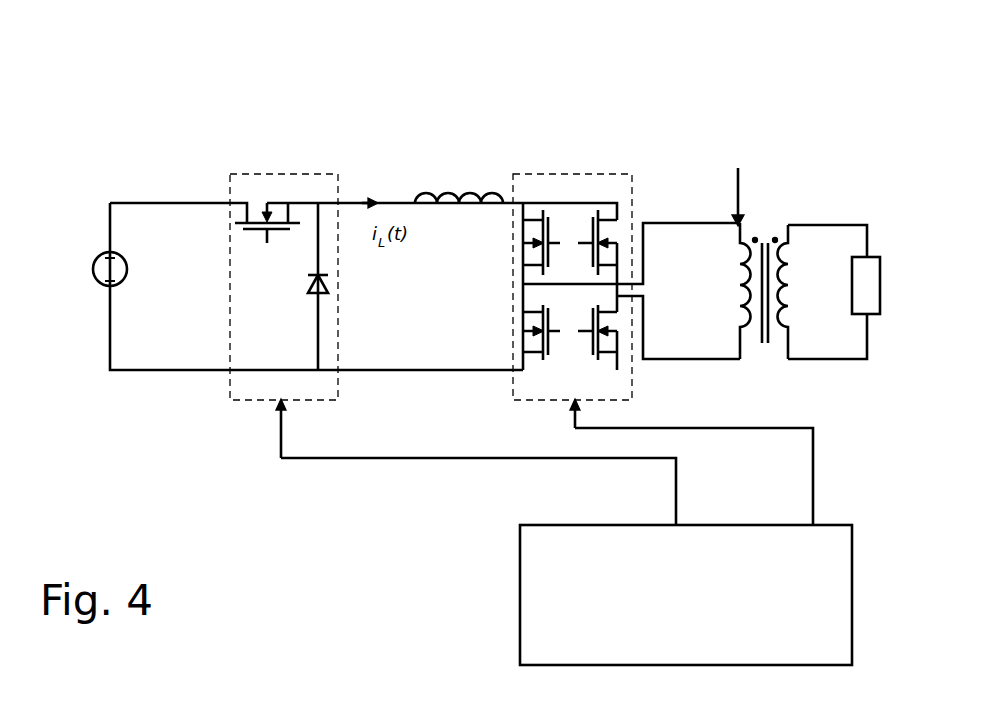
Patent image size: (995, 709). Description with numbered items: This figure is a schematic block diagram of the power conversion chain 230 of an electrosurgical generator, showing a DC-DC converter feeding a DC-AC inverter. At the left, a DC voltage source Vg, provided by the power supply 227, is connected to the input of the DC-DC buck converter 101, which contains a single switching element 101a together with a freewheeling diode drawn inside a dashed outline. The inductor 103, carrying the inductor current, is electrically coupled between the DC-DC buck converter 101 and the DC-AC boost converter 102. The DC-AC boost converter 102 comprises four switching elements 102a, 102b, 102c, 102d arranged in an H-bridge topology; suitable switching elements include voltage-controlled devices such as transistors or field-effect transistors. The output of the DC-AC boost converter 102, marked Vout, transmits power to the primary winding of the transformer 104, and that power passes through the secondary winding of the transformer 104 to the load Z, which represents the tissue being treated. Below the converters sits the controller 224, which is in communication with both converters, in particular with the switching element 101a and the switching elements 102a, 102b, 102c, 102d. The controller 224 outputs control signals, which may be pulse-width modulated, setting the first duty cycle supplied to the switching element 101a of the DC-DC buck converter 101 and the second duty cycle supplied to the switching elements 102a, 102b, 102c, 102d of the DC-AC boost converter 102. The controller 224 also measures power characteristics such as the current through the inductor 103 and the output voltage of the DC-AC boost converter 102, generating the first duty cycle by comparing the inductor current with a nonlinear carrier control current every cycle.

The power conversion system 230 is at (44, 7).
The power supply 227 is at (100, 250).
The DC-DC buck converter 101 is at (301, 92).
The switching element 101a is at (297, 218).
The inductor 103 is at (418, 186).
The DC-AC boost converter 102 is at (586, 92).
The switching element 102a is at (523, 275).
The switching element 102b is at (523, 352).
The switching element 102c is at (622, 256).
The switching element 102d is at (623, 359).
The transformer 104 is at (765, 222).
The controller 224 is at (562, 523).